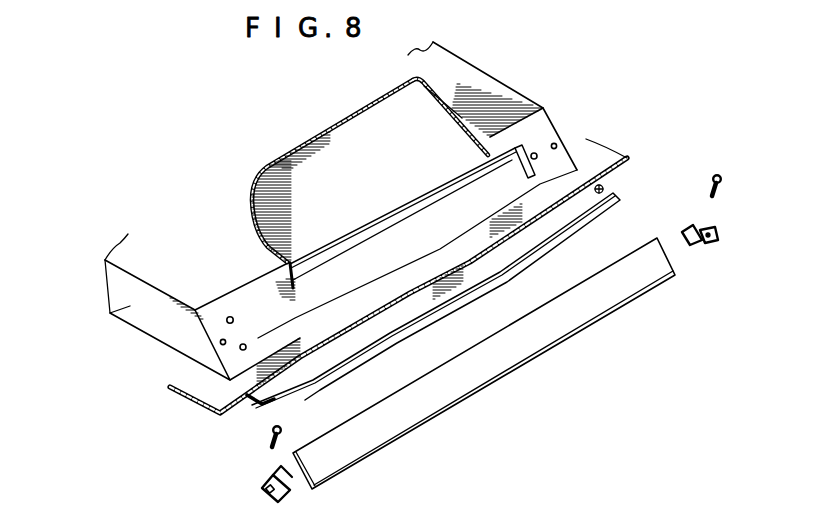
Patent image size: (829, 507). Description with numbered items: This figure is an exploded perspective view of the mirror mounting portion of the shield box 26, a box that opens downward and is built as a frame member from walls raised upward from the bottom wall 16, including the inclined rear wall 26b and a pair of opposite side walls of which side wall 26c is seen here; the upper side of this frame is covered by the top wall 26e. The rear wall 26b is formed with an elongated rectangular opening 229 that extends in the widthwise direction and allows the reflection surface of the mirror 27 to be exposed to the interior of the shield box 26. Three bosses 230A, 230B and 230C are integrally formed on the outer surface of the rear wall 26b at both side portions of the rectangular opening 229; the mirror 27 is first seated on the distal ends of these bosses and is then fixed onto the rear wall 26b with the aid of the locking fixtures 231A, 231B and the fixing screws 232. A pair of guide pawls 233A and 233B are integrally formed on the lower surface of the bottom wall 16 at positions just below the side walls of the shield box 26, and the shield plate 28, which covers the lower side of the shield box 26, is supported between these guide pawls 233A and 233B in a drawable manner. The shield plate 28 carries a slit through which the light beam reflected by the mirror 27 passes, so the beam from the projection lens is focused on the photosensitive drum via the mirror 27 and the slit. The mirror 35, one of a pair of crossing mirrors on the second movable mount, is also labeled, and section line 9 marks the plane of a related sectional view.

The section line 9- 9 is at (137, 312).
The shield box 26 is at (176, 224).
The rear wall 26b is at (540, 117).
The side wall 26c is at (150, 320).
The top wall 26e is at (460, 66).
The mirror 35 is at (387, 213).
The elongated rectangular opening 229 is at (285, 276).
The boss 230A is at (228, 315).
The boss 230B is at (240, 349).
The boss 230C is at (548, 145).
The bottom wall 16 is at (193, 400).
The shield plate 28 is at (472, 285).
The guide pawl 233A is at (245, 396).
The guide pawl 233B is at (605, 185).
The mirror 27 is at (540, 345).
The fixing screw 232 is at (270, 434).
The locking fixture 231A is at (258, 476).
The locking fixture 231B is at (700, 245).